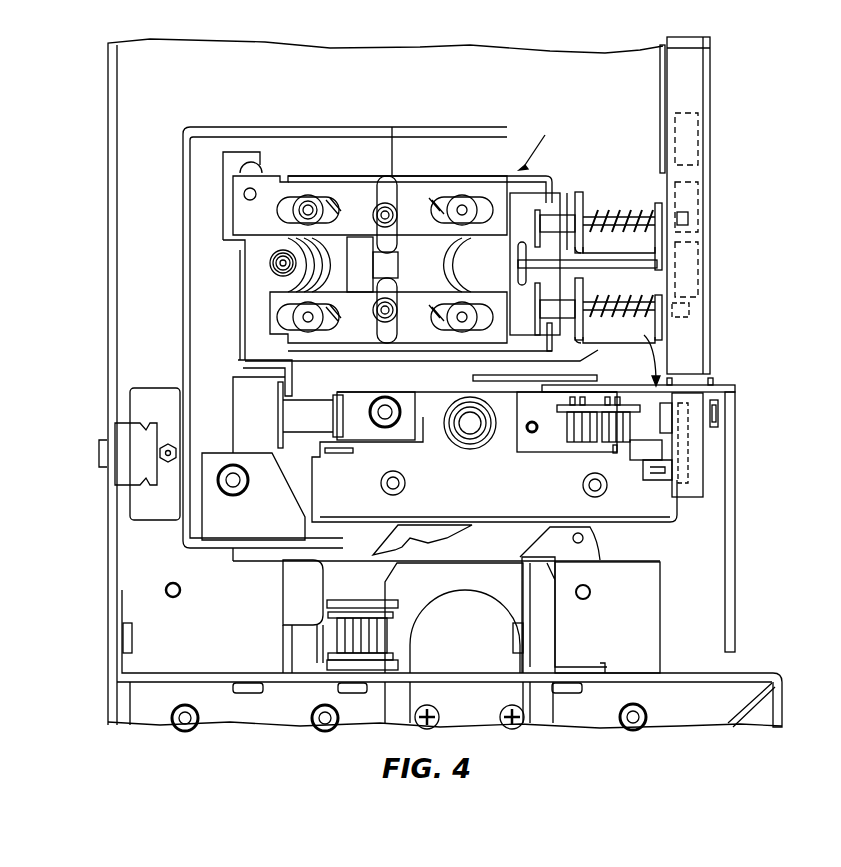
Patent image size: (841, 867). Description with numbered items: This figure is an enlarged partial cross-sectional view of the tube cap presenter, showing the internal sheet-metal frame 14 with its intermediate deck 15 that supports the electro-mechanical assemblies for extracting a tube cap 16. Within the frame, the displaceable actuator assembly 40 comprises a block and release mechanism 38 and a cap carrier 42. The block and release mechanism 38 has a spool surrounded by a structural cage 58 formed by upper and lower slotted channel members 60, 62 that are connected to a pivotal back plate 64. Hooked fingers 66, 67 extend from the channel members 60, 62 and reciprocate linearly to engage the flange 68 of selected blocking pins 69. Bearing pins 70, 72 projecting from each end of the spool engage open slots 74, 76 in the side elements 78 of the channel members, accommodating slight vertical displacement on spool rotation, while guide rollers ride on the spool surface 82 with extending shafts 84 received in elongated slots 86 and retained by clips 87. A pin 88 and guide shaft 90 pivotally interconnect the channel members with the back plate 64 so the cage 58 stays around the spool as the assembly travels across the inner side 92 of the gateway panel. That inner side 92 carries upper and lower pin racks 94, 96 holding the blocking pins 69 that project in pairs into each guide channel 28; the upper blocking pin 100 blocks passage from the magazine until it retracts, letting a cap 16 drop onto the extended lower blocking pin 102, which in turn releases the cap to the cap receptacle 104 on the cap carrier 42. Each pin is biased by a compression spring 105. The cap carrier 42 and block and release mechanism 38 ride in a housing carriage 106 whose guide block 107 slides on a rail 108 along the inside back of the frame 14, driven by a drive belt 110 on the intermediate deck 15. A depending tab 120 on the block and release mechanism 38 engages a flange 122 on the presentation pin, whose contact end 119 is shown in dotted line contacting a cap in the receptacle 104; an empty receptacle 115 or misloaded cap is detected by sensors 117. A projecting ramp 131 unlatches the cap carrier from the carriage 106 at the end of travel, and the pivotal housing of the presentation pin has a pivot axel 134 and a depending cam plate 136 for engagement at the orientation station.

The internal sheet-metal frame 14 is at (118, 92).
The intermediate deck 15 is at (160, 672).
The tube cap 16 is at (700, 140).
The guide channel 28 is at (690, 80).
The block and release mechanism 38 is at (541, 142).
The displaceable actuator assembly 40 is at (640, 352).
The cap carrier 42 is at (443, 498).
The structural cage 58 is at (393, 174).
The upper slotted channel member 60 is at (432, 192).
The lower slotted channel member 62 is at (418, 338).
The pivotal back plate 64 is at (250, 270).
The hooked finger 66 is at (548, 190).
The hooked finger 67 is at (580, 352).
The flange 68 is at (537, 295).
The blocking pin 69 is at (565, 215).
The bearing pin 70 is at (383, 205).
The bearing pin 72 is at (388, 318).
The open slot 74 is at (396, 205).
The open slot 76 is at (395, 305).
The side element 78 is at (265, 232).
The spool surface 82 is at (305, 283).
The extending shaft 84 is at (462, 205).
The elongated slot 86 is at (283, 312).
The clip 87 is at (306, 200).
The pin 88 is at (244, 194).
The guide shaft 90 is at (270, 262).
The inner side of the gateway panel 92 is at (660, 175).
The upper pin rack 94 is at (578, 203).
The lower pin rack 96 is at (580, 300).
The upper blocking pin 100 is at (665, 207).
The lower blocking pin 102 is at (677, 288).
The cap receptacle 104 is at (710, 380).
The compression spring 105 is at (606, 218).
The housing carriage 106 is at (183, 173).
The guide block 107 is at (143, 388).
The rail 108 is at (122, 485).
The drive belt 110 is at (390, 630).
The empty receptacle 115 is at (718, 430).
The sensor 117 is at (718, 412).
The contact end 119 is at (688, 433).
The depending tab 120 is at (292, 390).
The flange 122 is at (278, 391).
The projecting ramp 131 is at (300, 587).
The pivot axel 134 is at (478, 440).
The depending cam plate 136 is at (447, 538).